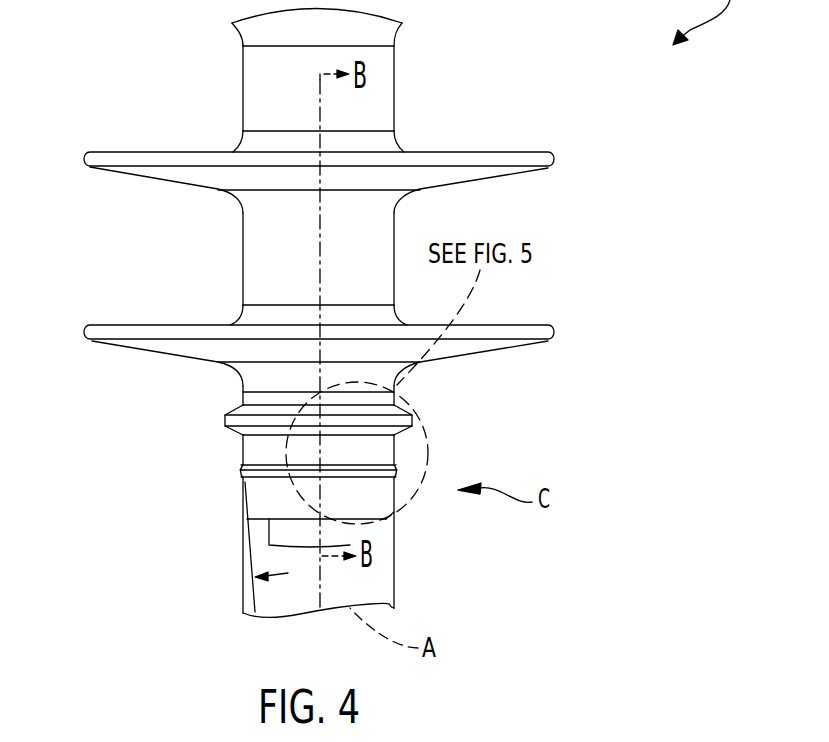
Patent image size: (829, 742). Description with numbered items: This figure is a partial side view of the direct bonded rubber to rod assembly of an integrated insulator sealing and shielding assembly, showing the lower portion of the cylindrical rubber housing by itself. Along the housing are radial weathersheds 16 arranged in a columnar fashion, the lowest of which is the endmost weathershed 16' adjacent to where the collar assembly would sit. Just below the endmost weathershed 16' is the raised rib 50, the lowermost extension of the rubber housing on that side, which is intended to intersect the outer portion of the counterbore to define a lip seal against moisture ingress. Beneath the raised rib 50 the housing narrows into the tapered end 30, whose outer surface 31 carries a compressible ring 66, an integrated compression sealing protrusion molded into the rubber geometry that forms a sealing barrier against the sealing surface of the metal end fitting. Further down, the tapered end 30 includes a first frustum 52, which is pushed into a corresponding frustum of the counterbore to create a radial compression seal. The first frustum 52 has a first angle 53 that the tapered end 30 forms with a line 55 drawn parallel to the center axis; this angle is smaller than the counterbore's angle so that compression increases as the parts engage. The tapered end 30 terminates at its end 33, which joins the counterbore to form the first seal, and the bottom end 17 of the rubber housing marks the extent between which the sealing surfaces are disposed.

The weathershed 16 is at (293, 269).
The endmost weathershed 16' is at (468, 171).
The raised rib 50 is at (400, 428).
The outer surface 31 is at (243, 452).
The ring 66 is at (243, 466).
The tapered end 30 is at (396, 497).
The first frustum 52 is at (398, 511).
The bottom end 17 is at (380, 520).
The line 55 is at (243, 570).
The first angle 53 is at (238, 583).
The end 33 is at (290, 519).